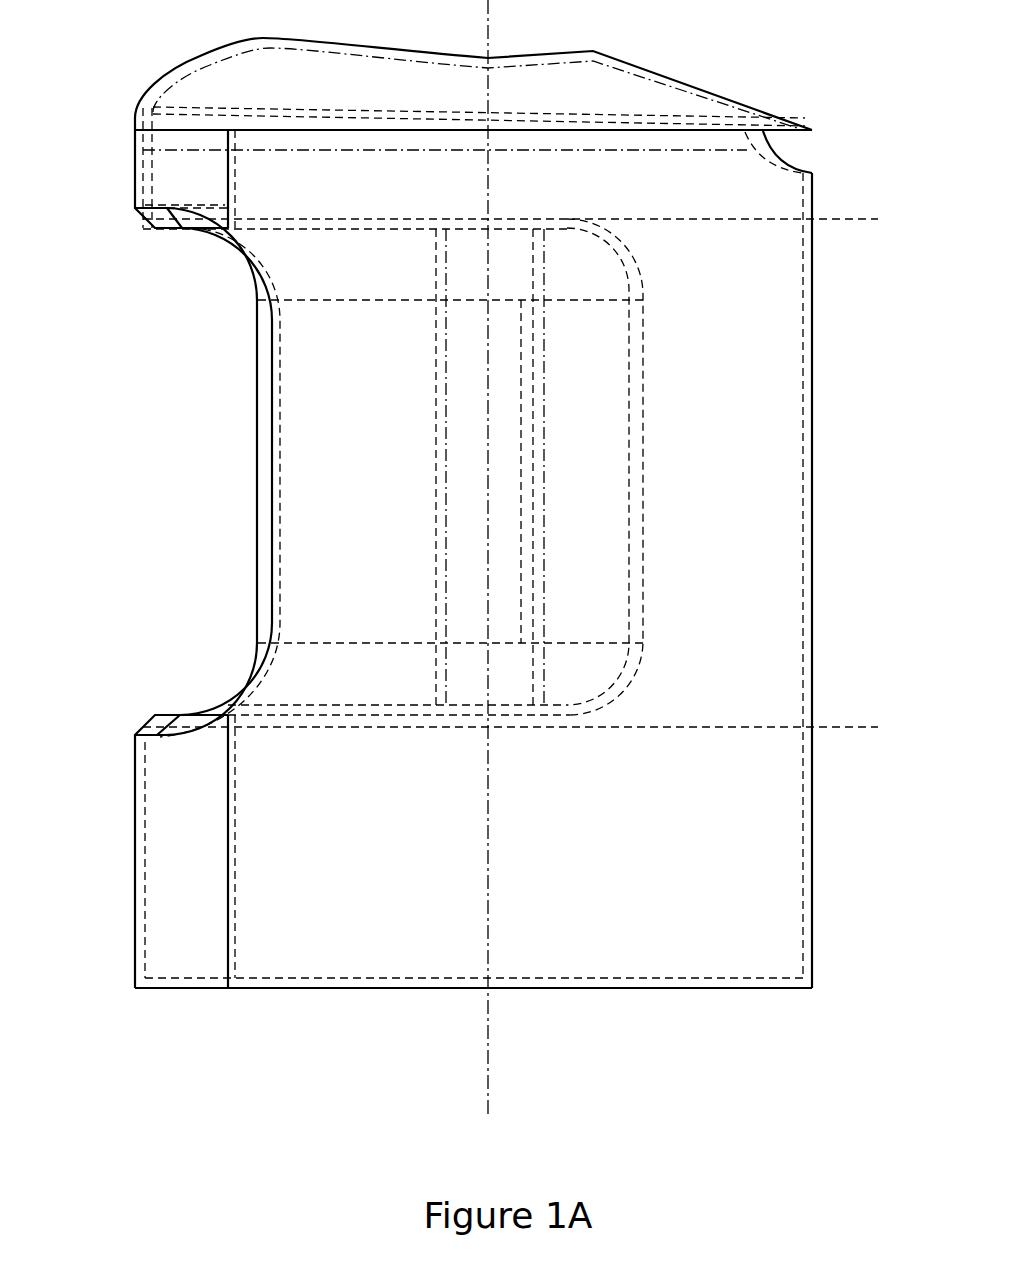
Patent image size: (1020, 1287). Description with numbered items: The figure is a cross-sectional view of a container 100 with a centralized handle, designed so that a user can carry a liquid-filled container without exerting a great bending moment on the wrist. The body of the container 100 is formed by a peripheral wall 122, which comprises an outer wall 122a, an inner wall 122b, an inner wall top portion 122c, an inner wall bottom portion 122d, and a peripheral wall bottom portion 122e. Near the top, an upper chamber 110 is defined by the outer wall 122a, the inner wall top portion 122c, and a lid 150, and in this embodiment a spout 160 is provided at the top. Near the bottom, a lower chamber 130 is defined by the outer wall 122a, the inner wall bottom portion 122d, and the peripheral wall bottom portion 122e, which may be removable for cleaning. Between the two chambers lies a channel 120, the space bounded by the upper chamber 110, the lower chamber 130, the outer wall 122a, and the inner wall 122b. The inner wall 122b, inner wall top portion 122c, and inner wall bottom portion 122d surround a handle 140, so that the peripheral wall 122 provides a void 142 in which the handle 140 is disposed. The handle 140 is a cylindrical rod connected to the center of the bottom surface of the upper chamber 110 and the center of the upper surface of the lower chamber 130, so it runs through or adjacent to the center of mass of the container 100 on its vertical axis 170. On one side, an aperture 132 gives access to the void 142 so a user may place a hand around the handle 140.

The container 100 is at (548, 1058).
The upper chamber 110 is at (126, 67).
The channel 120 is at (878, 727).
The peripheral wall 122 is at (267, 640).
The outer wall 122a is at (813, 843).
The inner wall 122b is at (630, 459).
The inner wall top portion 122c is at (312, 232).
The inner wall bottom portion 122d is at (315, 708).
The peripheral wall bottom portion 122e is at (690, 995).
The lower chamber 130 is at (126, 722).
The aperture 132 is at (126, 712).
The handle 140 is at (478, 533).
The void 142 is at (322, 365).
The lid 150 is at (643, 97).
The spout 160 is at (792, 148).
The vertical axis 170 is at (488, 1046).